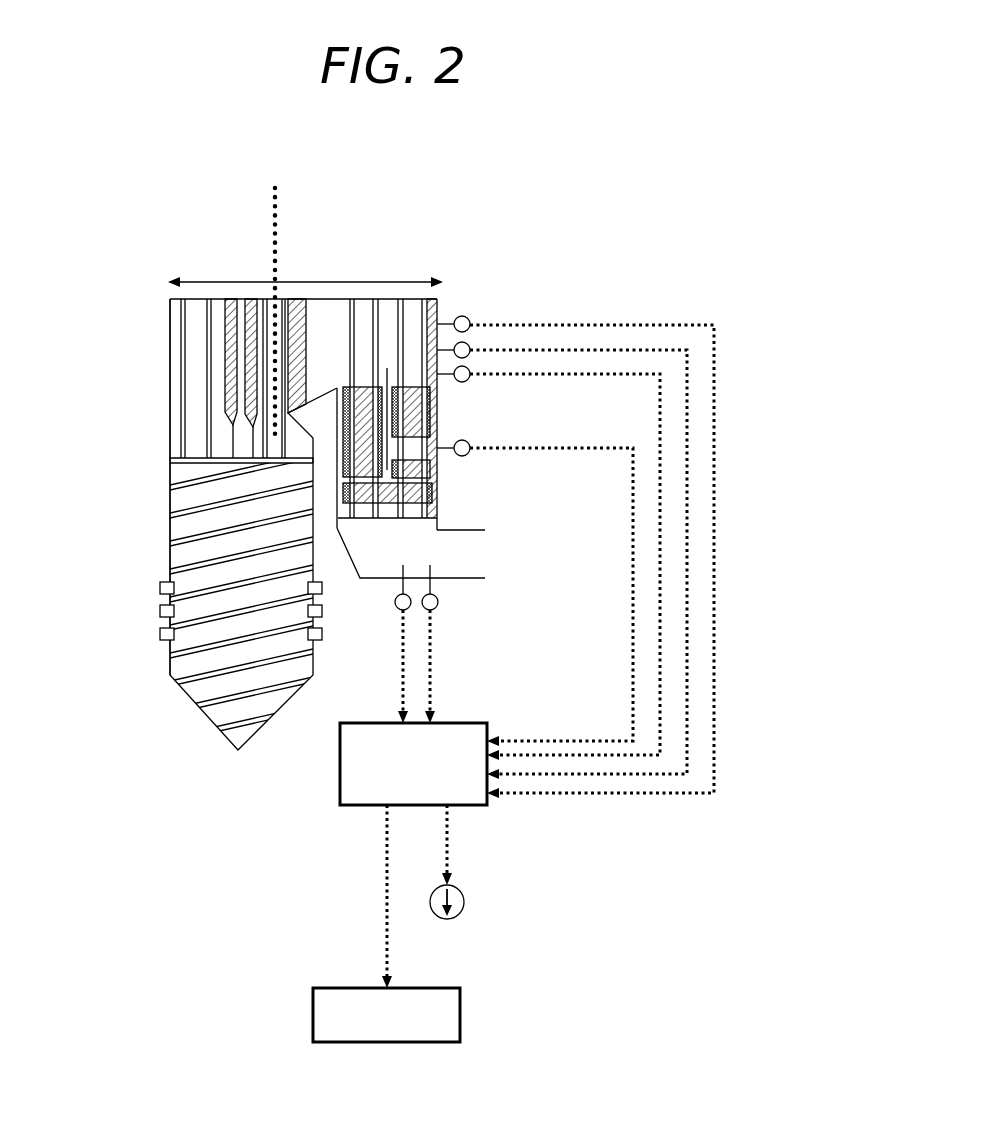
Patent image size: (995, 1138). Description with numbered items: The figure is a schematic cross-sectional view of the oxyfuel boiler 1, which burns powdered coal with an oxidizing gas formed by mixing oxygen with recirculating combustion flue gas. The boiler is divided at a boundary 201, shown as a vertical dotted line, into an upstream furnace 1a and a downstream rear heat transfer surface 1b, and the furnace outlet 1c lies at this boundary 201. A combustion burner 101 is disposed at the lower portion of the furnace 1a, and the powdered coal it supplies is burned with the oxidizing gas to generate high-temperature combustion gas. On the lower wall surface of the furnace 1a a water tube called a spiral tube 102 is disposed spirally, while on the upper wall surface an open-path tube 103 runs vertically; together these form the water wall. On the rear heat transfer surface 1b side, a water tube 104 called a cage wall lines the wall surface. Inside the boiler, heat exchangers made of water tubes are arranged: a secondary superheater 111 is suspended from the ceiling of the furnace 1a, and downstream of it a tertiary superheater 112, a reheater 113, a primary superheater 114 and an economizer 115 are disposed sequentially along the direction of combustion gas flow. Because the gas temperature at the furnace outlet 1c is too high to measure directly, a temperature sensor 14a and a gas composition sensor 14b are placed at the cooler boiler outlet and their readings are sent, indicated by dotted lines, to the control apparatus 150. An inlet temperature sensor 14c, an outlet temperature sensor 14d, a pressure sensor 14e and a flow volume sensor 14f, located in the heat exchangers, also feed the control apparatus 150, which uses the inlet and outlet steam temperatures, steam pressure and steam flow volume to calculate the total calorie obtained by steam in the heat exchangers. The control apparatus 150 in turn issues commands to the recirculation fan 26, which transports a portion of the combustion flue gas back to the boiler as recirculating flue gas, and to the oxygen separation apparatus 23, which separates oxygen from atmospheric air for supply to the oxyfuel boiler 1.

The oxyfuel boiler 1 is at (121, 398).
The furnace 1a is at (266, 264).
The rear heat transfer surface 1b is at (455, 245).
The furnace outlet 1c is at (456, 553).
The combustion burner 101 is at (160, 587).
The spiral tube 102 is at (180, 532).
The open-path tube 103 is at (178, 327).
The water tube (cage wall) 104 is at (437, 302).
The secondary superheater 111 is at (252, 299).
The tertiary superheater 112 is at (297, 299).
The reheater 113 is at (360, 397).
The primary superheater 114 is at (417, 405).
The economizer 115 is at (420, 493).
The boundary 201 is at (279, 190).
The temperature sensor 14a is at (398, 611).
The gas composition sensor 14b is at (435, 611).
The inlet temperature sensor 14c is at (470, 445).
The outlet temperature sensor 14d is at (468, 378).
The pressure sensor 14e is at (470, 347).
The flow volume sensor 14f is at (470, 321).
The control apparatus 150 is at (452, 723).
The recirculation fan 26 is at (464, 896).
The oxygen separation apparatus 23 is at (415, 988).